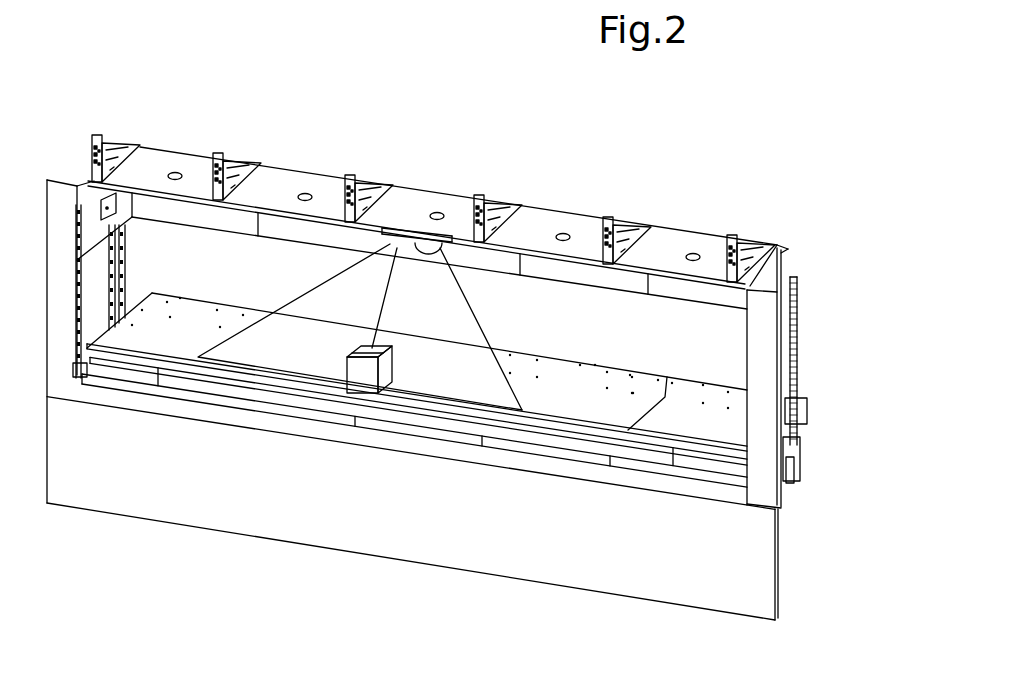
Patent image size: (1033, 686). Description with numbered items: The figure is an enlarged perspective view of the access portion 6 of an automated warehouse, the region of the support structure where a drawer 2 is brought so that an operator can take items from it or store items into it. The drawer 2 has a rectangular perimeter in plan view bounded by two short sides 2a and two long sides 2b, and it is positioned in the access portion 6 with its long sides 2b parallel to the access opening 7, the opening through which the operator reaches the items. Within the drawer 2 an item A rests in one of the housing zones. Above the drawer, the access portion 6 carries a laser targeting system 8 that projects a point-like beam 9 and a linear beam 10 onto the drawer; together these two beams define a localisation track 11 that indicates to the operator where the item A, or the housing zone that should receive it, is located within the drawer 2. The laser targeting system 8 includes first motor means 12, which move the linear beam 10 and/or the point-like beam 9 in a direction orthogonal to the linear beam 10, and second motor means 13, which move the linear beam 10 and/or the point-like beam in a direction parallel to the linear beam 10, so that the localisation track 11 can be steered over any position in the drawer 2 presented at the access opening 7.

The drawer 2 is at (688, 468).
The short side 2a is at (103, 338).
The long side 2b is at (190, 298).
The access portion 6 is at (603, 178).
The access opening 7 is at (790, 362).
The laser targeting system 8 is at (427, 238).
The point-like beam 9 is at (450, 262).
The linear beam 10 is at (340, 300).
The localisation track 11 is at (438, 402).
The first motor means 12 is at (397, 243).
The second motor means 13 is at (395, 297).
The item A is at (366, 378).